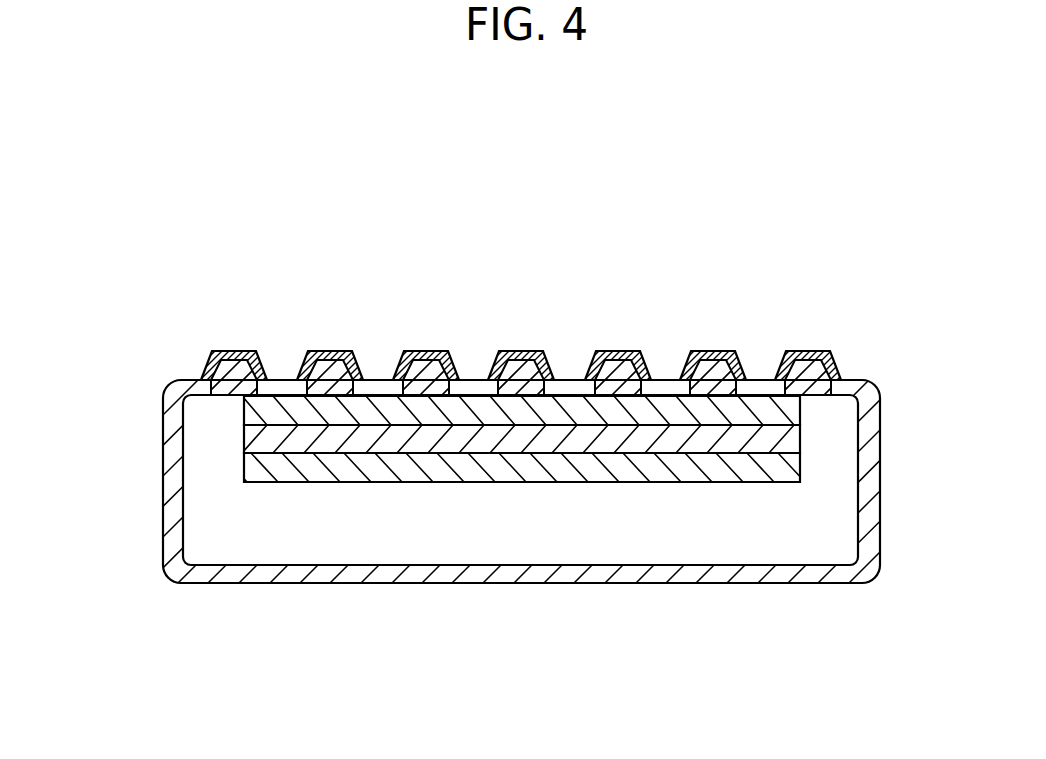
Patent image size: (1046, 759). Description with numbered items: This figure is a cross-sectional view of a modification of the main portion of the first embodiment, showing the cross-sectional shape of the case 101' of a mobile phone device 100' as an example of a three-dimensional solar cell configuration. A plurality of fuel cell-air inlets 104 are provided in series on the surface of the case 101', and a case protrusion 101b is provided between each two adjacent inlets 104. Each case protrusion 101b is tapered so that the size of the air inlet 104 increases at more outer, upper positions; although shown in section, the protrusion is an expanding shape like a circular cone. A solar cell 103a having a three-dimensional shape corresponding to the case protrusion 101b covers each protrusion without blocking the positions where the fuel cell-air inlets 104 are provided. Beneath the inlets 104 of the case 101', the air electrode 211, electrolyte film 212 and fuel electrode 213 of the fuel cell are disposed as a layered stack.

The mobile phone device 100' is at (638, 168).
The case 101' is at (523, 481).
The case protrusion 101b is at (225, 392).
The solar cell 103a is at (232, 351).
The fuel cell-air inlet 104 is at (297, 381).
The air electrode 211 is at (800, 408).
The electrolyte film 212 is at (800, 436).
The fuel electrode 213 is at (800, 468).